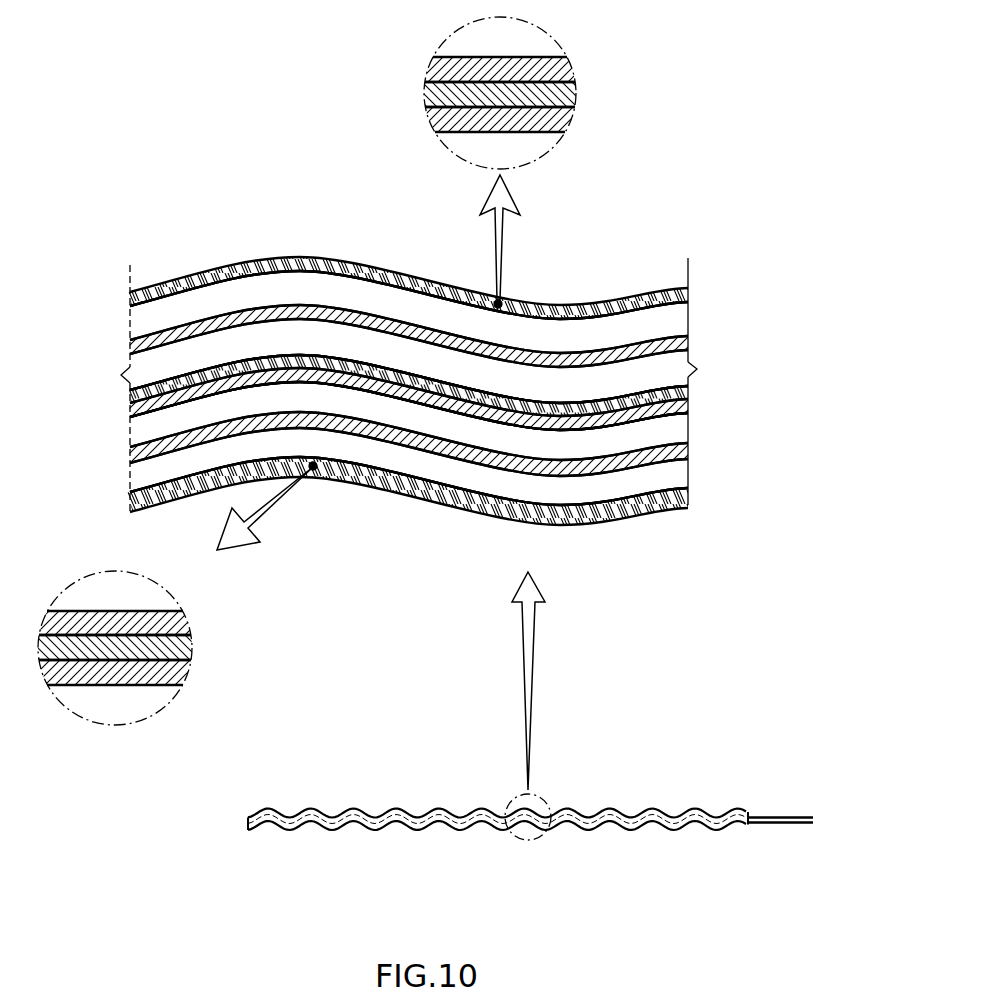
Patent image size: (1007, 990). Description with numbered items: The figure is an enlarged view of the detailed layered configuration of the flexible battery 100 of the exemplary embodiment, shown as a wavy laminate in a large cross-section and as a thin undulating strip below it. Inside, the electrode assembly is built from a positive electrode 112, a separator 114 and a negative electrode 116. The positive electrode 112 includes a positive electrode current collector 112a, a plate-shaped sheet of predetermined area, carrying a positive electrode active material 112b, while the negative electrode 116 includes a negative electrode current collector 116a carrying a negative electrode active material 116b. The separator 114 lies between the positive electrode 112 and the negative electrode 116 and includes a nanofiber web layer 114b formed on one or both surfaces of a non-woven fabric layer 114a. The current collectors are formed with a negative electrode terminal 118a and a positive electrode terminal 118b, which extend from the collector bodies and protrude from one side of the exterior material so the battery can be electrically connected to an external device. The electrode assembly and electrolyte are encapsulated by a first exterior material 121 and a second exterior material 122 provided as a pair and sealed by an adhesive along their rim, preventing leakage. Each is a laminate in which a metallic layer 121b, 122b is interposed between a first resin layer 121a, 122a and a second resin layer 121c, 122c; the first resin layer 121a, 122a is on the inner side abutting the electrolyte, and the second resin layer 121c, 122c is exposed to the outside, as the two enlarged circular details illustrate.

The flexible battery 100 is at (316, 238).
The positive electrode 112 is at (793, 447).
The positive electrode current collector 112a is at (687, 450).
The positive electrode active material 112b is at (687, 427).
The separator 114 is at (793, 393).
The non-woven fabric layer 114a is at (687, 390).
The nanofiber web layer 114b is at (687, 400).
The negative electrode 116 is at (793, 293).
The negative electrode current collector 116a is at (687, 340).
The negative electrode active material 116b is at (687, 317).
The negative electrode terminal 118a is at (778, 818).
The positive electrode terminal 118b is at (790, 827).
The first exterior material 121 is at (687, 292).
The first resin layer 121a is at (565, 120).
The metallic layer 121b is at (575, 90).
The second resin layer 121c is at (567, 65).
The second exterior material 122 is at (675, 520).
The first resin layer 122a is at (186, 620).
The metallic layer 122b is at (190, 648).
The second resin layer 122c is at (183, 677).